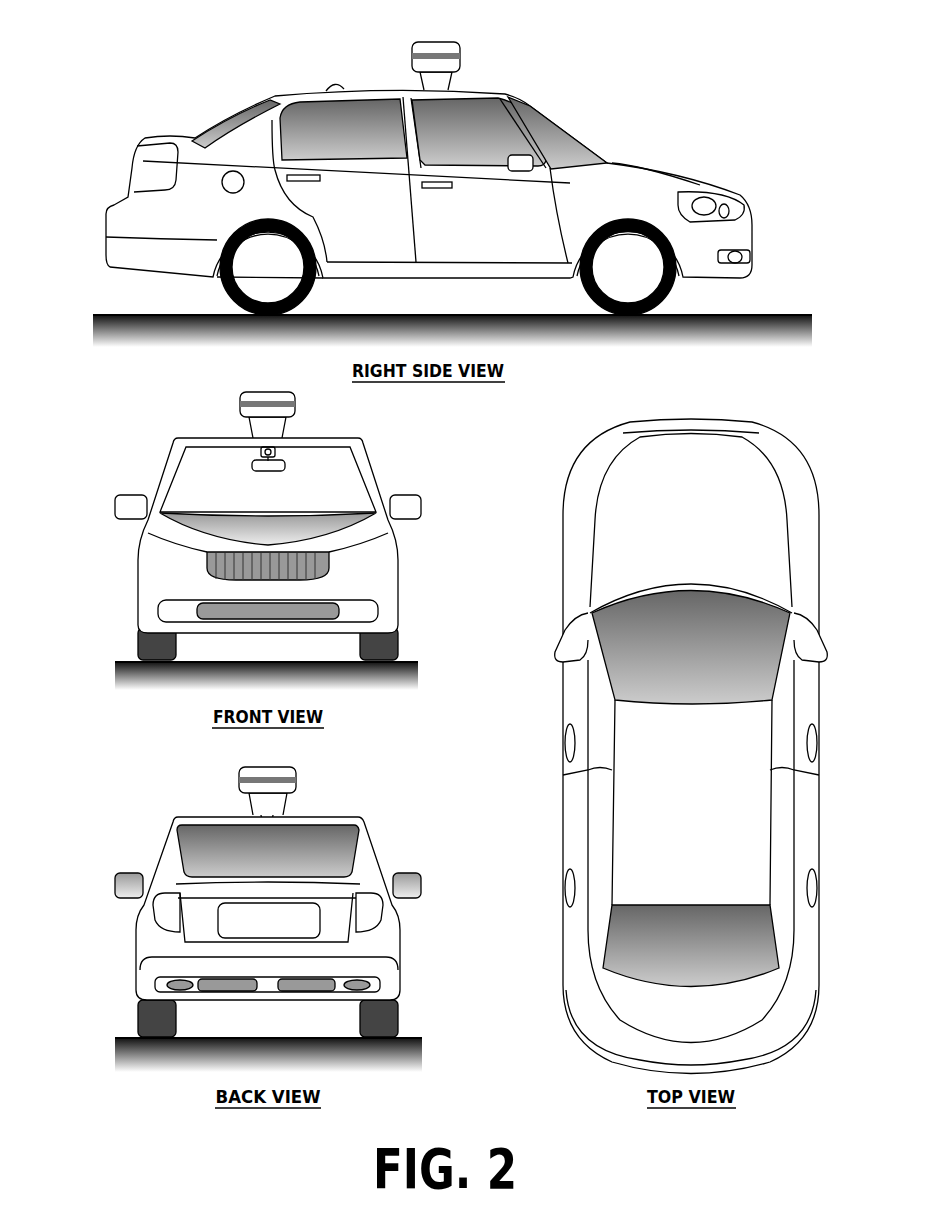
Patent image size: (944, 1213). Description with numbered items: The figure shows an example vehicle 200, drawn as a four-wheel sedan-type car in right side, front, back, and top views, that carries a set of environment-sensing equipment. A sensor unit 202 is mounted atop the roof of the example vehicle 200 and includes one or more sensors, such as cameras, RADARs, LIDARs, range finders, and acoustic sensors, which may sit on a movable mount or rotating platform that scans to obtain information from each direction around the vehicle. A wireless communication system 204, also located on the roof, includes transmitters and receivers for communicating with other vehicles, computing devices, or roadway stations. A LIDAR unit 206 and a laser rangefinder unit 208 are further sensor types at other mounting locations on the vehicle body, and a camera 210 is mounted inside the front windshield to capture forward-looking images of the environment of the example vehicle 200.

The example vehicle 200 is at (108, 132).
The sensor unit 202 is at (460, 62).
The wireless communication system 204 is at (331, 84).
The LIDAR unit 206 is at (752, 258).
The laser rangefinder unit 208 is at (745, 213).
The camera 210 is at (276, 451).